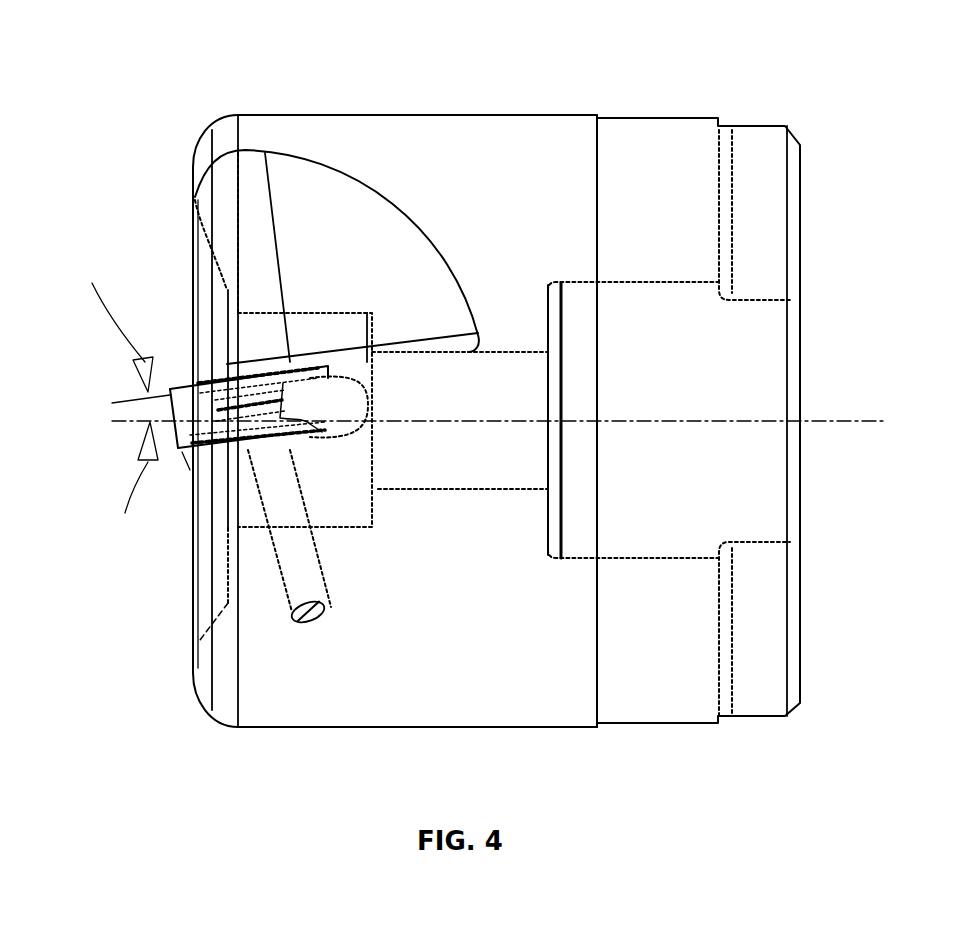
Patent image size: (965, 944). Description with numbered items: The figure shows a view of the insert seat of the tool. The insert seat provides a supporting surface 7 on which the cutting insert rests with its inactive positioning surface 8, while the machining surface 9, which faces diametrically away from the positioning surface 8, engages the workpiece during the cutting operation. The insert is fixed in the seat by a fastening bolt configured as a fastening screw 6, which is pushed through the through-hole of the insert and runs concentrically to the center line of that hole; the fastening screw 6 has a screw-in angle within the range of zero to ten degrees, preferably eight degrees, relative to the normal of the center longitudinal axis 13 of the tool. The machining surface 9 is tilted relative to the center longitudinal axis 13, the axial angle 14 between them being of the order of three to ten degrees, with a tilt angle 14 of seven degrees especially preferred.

The fastening screw 6 is at (290, 577).
The supporting surface 7 is at (286, 385).
The positioning surface 8 is at (190, 450).
The machining surface 9 is at (193, 388).
The center longitudinal axis 13 is at (832, 430).
The axial angle 14 is at (150, 408).